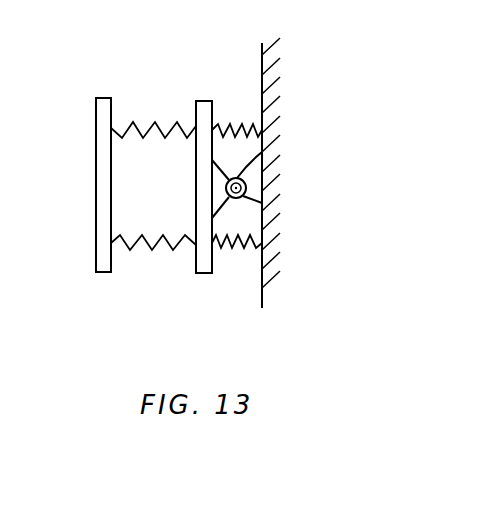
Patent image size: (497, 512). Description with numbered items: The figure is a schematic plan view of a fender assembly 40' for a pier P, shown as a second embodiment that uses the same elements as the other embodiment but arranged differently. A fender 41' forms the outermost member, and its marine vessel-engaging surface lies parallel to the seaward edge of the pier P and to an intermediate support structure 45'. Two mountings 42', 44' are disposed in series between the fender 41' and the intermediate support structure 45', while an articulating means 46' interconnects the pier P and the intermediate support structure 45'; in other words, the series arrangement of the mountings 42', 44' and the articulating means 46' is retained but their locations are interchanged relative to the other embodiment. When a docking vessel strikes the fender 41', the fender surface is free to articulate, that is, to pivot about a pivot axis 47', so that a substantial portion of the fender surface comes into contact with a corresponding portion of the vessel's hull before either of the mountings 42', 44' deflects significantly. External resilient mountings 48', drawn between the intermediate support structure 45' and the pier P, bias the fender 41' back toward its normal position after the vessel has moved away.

The fender assembly 40' is at (130, 145).
The fender 41' is at (73, 185).
The mounting 42' is at (153, 101).
The mounting 44' is at (153, 269).
The intermediate support structure 45' is at (229, 152).
The articulating means 46' is at (283, 165).
The pivot axis 47' is at (279, 196).
The external resilient mountings 48' is at (238, 190).
The pier P is at (272, 99).